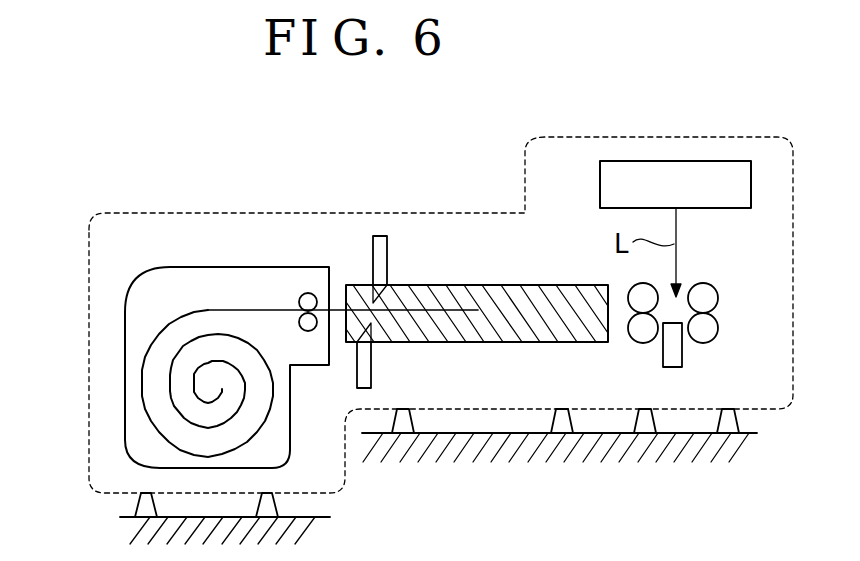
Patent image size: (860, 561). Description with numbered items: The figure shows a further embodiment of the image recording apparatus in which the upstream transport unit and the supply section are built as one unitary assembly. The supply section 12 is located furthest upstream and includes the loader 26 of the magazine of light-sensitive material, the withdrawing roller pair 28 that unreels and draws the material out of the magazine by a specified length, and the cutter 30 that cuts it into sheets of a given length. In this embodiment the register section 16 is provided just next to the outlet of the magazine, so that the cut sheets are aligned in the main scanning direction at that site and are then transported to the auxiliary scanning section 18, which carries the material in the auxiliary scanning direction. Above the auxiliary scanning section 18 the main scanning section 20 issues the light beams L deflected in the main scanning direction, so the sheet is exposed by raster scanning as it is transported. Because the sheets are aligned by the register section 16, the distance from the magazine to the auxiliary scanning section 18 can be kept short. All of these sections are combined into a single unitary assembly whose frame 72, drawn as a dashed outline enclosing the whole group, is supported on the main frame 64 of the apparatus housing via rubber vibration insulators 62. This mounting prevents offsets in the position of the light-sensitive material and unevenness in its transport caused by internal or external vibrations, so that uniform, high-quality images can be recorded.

The light-sensitive material supply section 12 is at (265, 232).
The register section 16 is at (574, 285).
The auxiliary scanning section 18 is at (696, 271).
The main scanning section 20 is at (677, 185).
The loader 26 is at (125, 387).
The withdrawing roller pair 28 is at (307, 332).
The cutter 30 is at (381, 236).
The rubber vibration insulator 62 is at (146, 502).
The main frame 64 is at (133, 541).
The frame 72 is at (588, 137).